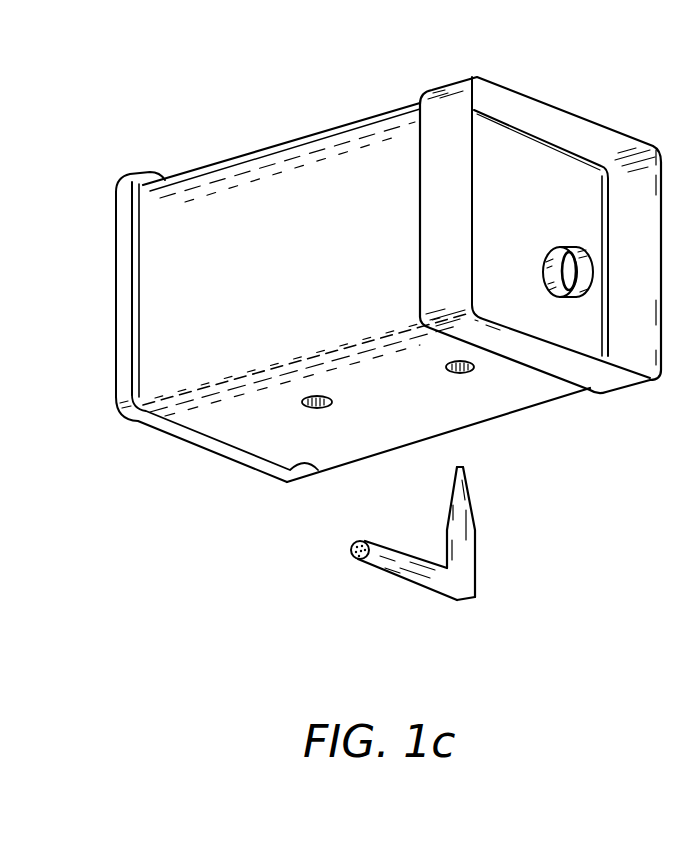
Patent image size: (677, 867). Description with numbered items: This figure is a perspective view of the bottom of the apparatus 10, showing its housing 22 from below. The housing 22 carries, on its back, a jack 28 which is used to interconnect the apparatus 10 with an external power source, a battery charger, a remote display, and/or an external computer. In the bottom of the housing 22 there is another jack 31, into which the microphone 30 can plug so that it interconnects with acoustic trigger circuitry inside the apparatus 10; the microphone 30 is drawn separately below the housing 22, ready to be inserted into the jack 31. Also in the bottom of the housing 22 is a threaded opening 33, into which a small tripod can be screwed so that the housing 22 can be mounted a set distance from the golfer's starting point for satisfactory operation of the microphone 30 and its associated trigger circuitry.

The apparatus 10 is at (250, 72).
The housing 22 is at (342, 128).
The jack 28 is at (563, 248).
The microphone 30 is at (477, 551).
The jack 31 is at (470, 372).
The threaded opening 33 is at (325, 407).